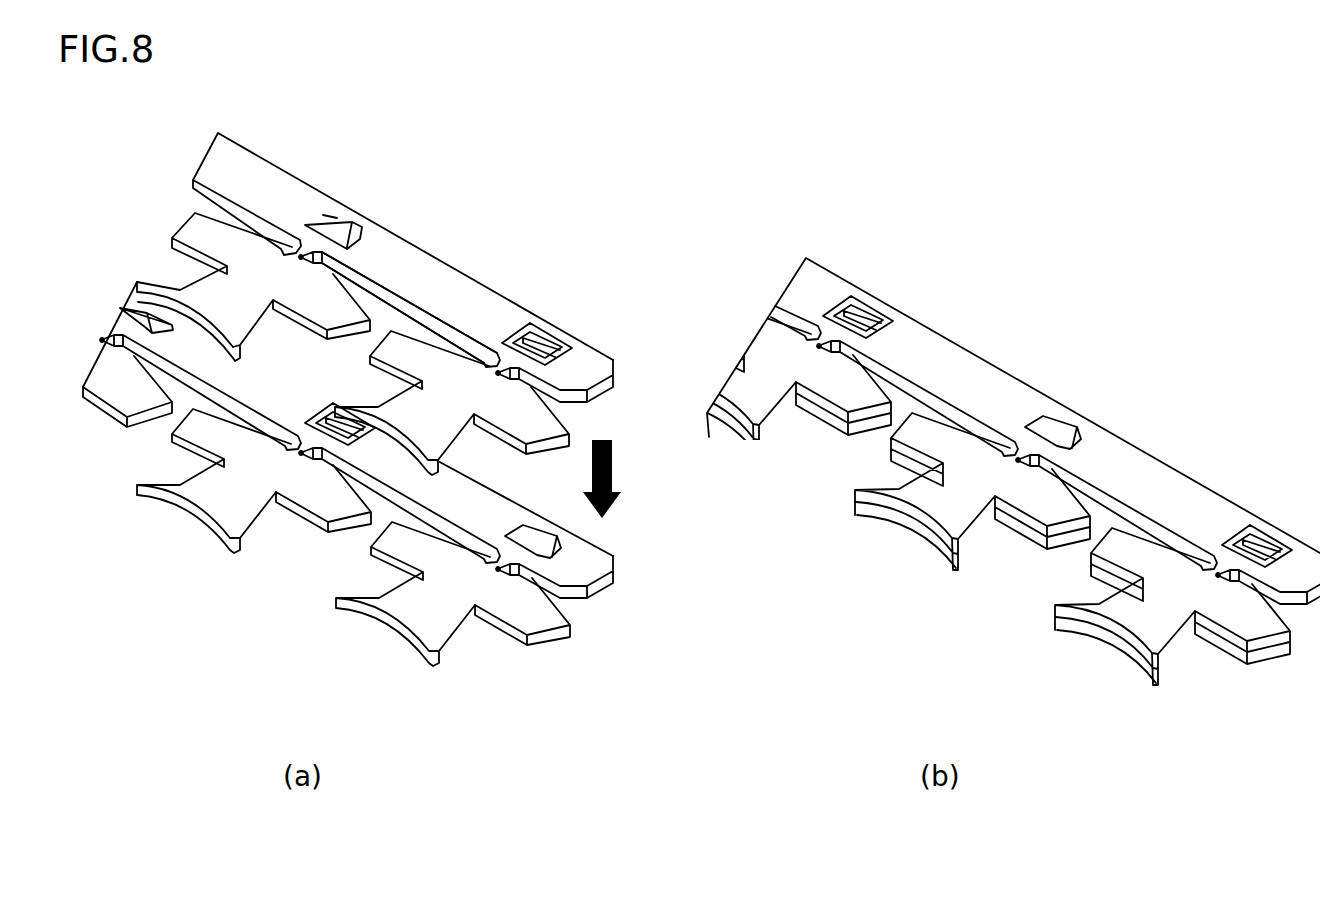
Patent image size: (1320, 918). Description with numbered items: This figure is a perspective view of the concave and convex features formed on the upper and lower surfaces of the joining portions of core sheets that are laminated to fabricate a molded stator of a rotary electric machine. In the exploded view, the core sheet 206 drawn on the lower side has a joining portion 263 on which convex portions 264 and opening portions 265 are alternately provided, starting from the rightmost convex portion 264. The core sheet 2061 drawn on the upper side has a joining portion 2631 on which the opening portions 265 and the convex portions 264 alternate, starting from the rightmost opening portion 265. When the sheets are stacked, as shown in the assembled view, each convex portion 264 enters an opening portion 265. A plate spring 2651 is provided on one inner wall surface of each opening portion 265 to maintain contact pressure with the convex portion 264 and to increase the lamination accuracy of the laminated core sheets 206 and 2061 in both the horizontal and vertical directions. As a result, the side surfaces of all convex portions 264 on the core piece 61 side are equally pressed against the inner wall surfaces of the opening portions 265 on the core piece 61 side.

The core sheet 2061 is at (403, 386).
The joining portion 2631 is at (390, 252).
The opening portion 265 is at (527, 327).
The plate spring 2651 is at (557, 350).
The joining portion 263 is at (493, 527).
The core sheet 206 is at (437, 510).
The core piece 61 is at (440, 610).
The convex portion 264 is at (557, 547).